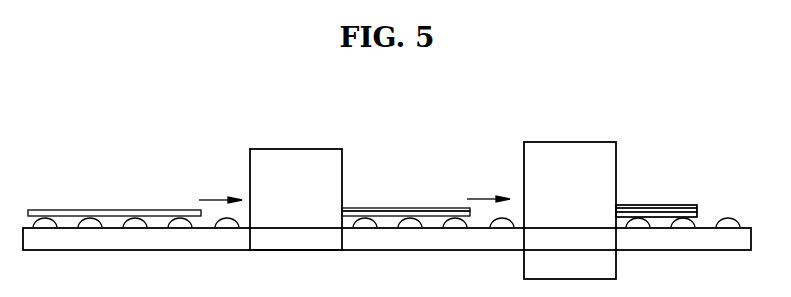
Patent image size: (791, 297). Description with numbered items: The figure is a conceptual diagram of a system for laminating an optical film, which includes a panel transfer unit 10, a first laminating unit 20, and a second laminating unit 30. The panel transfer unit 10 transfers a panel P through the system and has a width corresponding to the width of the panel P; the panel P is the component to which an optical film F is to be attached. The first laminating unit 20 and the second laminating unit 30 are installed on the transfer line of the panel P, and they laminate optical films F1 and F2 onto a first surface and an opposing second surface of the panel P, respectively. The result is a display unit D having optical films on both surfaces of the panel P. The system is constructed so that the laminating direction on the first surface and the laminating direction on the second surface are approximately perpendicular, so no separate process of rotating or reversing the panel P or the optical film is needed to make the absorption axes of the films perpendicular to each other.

The panel transfer unit 10 is at (98, 251).
The first laminating unit 20 is at (318, 149).
The second laminating unit 30 is at (590, 142).
The panel P is at (98, 210).
The optical film F is at (418, 208).
The optical film on first surface F1 is at (652, 205).
The optical film on second surface F2 is at (660, 217).
The display unit D is at (693, 188).